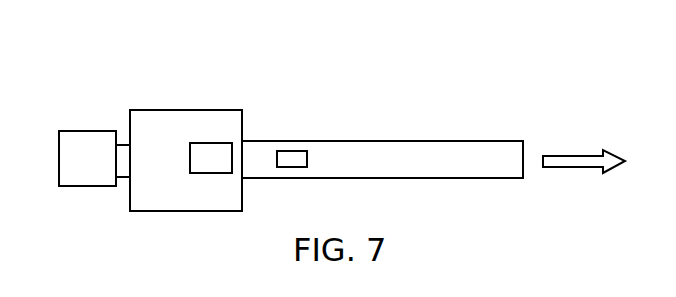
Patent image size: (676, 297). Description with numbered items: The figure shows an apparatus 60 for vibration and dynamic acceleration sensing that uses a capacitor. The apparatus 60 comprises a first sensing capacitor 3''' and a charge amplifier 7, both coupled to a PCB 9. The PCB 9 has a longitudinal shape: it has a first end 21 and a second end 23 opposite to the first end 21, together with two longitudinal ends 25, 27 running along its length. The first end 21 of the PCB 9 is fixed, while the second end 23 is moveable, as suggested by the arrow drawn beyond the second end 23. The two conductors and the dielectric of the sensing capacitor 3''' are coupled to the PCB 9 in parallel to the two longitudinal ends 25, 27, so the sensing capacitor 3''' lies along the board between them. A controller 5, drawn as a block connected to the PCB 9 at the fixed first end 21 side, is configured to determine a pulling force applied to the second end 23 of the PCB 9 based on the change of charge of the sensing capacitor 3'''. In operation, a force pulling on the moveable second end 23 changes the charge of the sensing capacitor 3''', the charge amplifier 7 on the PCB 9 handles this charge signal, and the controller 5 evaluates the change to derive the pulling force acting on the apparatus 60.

The apparatus 60 is at (80, 62).
The controller 5 is at (81, 130).
The PCB 9 is at (154, 110).
The charge amplifier 7 is at (212, 143).
The first end 21 is at (130, 199).
The longitudinal end 25 is at (383, 140).
The longitudinal end 27 is at (383, 179).
The second end 23 is at (517, 179).
The first sensing capacitor 3''' is at (282, 129).